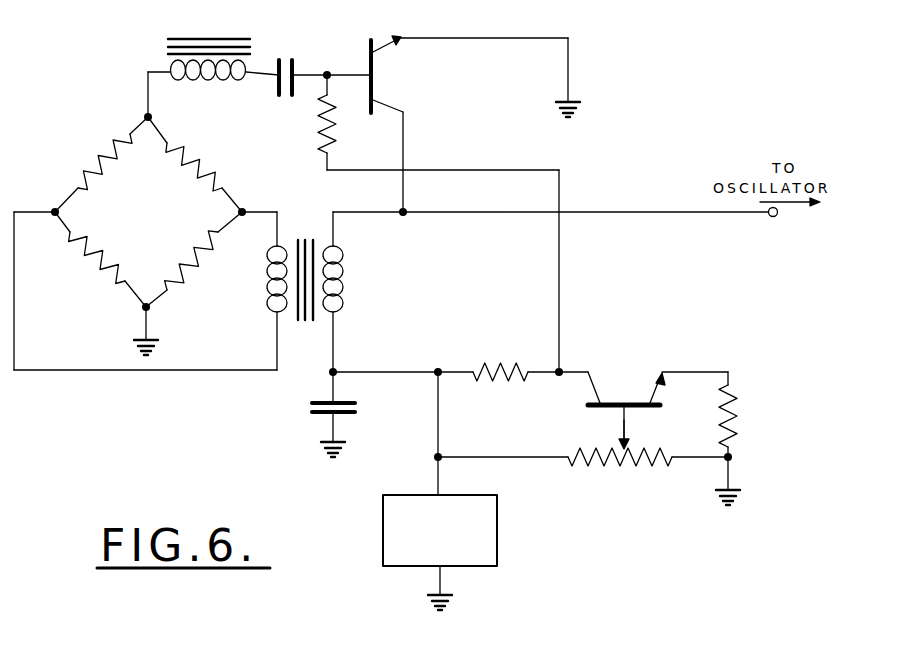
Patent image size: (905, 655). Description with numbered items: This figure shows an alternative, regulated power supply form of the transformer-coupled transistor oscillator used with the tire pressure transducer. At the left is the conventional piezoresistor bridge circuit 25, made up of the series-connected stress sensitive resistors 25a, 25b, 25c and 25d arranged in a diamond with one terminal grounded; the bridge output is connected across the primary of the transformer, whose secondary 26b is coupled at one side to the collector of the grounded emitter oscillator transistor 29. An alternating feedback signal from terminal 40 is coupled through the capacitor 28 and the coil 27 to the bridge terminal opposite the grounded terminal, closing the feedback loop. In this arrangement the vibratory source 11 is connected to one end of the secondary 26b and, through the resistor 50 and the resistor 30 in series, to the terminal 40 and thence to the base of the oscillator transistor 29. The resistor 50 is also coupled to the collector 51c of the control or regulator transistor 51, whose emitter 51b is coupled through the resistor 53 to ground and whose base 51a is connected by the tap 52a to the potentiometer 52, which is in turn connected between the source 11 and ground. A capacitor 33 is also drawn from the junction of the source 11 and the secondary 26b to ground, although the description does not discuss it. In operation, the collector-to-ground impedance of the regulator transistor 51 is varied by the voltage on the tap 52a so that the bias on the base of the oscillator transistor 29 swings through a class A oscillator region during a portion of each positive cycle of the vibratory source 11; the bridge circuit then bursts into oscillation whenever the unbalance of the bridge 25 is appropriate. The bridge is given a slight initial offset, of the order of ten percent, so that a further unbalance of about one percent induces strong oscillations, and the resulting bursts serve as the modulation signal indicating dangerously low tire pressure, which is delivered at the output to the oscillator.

The vibratory source 11 is at (497, 520).
The piezoresistor bridge circuit 25 is at (135, 214).
The stress sensitive resistor 25a is at (86, 168).
The stress sensitive resistor 25b is at (198, 148).
The stress sensitive resistor 25c is at (205, 265).
The stress sensitive resistor 25d is at (96, 283).
The secondary 26b is at (340, 292).
The coil 27 is at (166, 50).
The capacitor 28 is at (292, 60).
The grounded emitter transistor 29 is at (374, 80).
The resistor 30 is at (338, 128).
The capacitor 33 is at (310, 414).
The terminal 40 is at (327, 79).
The resistor 50 is at (498, 365).
The regulator transistor 51 is at (646, 380).
The base 51a is at (630, 403).
The emitter 51b is at (659, 396).
The collector 51c is at (594, 386).
The potentiometer 52 is at (620, 466).
The tap 52a is at (623, 428).
The resistor 53 is at (740, 422).